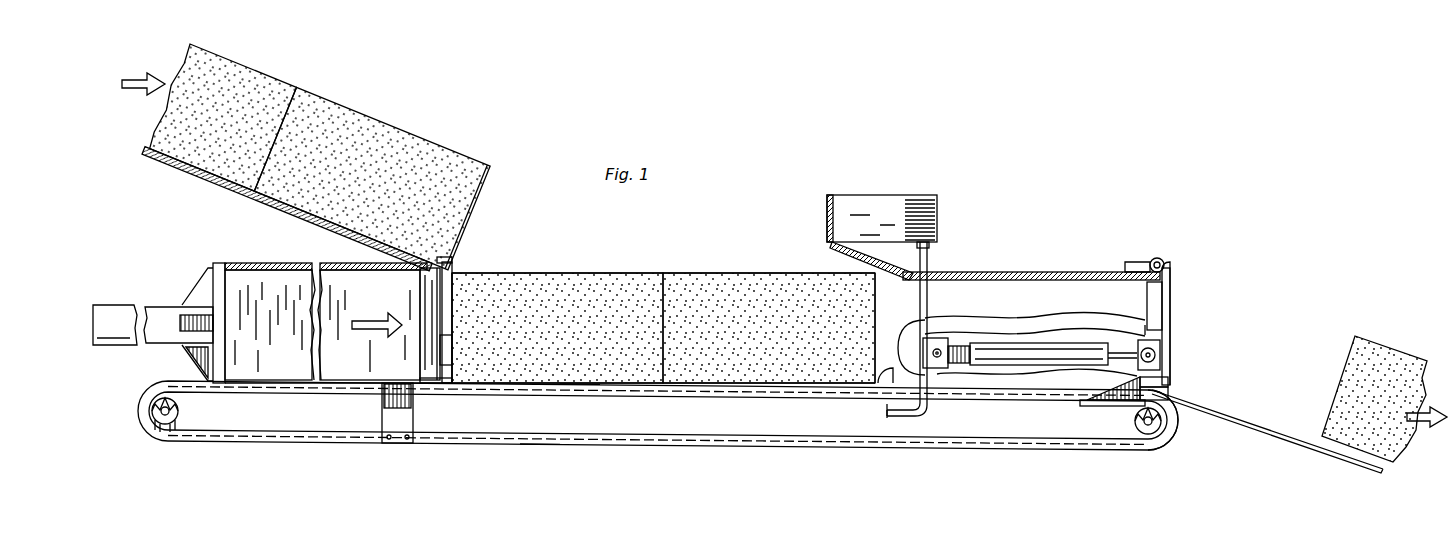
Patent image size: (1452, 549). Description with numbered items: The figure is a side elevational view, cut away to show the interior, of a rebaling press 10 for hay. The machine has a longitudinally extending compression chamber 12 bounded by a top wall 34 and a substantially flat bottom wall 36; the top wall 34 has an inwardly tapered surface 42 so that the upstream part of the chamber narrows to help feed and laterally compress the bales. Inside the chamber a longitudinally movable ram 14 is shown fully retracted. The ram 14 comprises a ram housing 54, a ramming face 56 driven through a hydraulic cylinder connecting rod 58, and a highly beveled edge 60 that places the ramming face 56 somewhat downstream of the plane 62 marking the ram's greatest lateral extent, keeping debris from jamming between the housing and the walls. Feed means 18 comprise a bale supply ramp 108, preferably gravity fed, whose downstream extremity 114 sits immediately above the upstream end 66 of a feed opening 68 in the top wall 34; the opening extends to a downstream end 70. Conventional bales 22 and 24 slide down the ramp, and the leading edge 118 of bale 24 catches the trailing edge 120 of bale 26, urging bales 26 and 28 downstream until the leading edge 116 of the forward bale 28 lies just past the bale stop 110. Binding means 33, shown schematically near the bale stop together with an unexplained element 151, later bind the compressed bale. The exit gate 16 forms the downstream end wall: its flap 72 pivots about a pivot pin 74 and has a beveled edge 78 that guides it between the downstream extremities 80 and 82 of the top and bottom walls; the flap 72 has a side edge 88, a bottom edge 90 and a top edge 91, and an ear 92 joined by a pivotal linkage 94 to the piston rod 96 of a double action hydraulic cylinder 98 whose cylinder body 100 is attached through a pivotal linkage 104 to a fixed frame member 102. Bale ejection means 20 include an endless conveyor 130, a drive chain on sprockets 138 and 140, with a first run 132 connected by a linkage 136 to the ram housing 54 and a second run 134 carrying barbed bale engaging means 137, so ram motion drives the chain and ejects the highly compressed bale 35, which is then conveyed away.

The rebaling press 10 is at (984, 121).
The compression chamber 12 is at (877, 315).
The ram 14 is at (360, 353).
The exit gate 16 is at (1172, 308).
The feed means 18 is at (661, 242).
The bale ejection means 20 is at (1088, 402).
The bale 22 is at (258, 78).
The bale 24 is at (383, 133).
The bale 26 is at (605, 280).
The forward bale 28 is at (725, 280).
The binding means 33 is at (912, 203).
The top wall 34 is at (232, 260).
The highly compressed bale 35 is at (1390, 353).
The bottom wall 36 is at (868, 370).
The inwardly tapered surface 42 is at (833, 252).
The ram housing 54 is at (265, 347).
The ramming face 56 is at (445, 350).
The hydraulic cylinder connecting rod 58 is at (117, 305).
The beveled edge 60 is at (437, 383).
The plane 62 is at (420, 297).
The upstream end 66 is at (457, 265).
The feed opening 68 is at (534, 232).
The downstream end 70 is at (1143, 300).
The flap 72 is at (1167, 330).
The pivot pin 74 is at (1165, 258).
The beveled edge 78 is at (1163, 296).
The downstream extremity 80 is at (1170, 277).
The downstream extremity 82 is at (1183, 393).
The side edge 88 is at (1165, 340).
The bottom edge 90 is at (1170, 380).
The top edge 91 is at (1170, 263).
The ear 92 is at (1168, 356).
The pivotal linkage 94 is at (1093, 380).
The piston rod 96 is at (1130, 342).
The hydraulic cylinder 98 is at (993, 360).
The cylinder body 100 is at (975, 345).
The fixed frame member 102 is at (938, 337).
The pivotal linkage 104 is at (878, 353).
The bale supply ramp 108 is at (293, 213).
The bale stop 110 is at (827, 210).
The downstream extremity 114 is at (438, 258).
The leading edge 116 is at (928, 260).
The leading edge 118 is at (488, 183).
The trailing edge 120 is at (455, 305).
The endless conveyor 130 is at (633, 445).
The first run 132 is at (530, 440).
The second run 134 is at (573, 397).
The linkage 136 is at (398, 425).
The barbed bale engaging means 137 is at (1120, 395).
The sprocket 138 is at (140, 423).
The sprocket 140 is at (1163, 440).
The tube fitting 151 is at (928, 250).